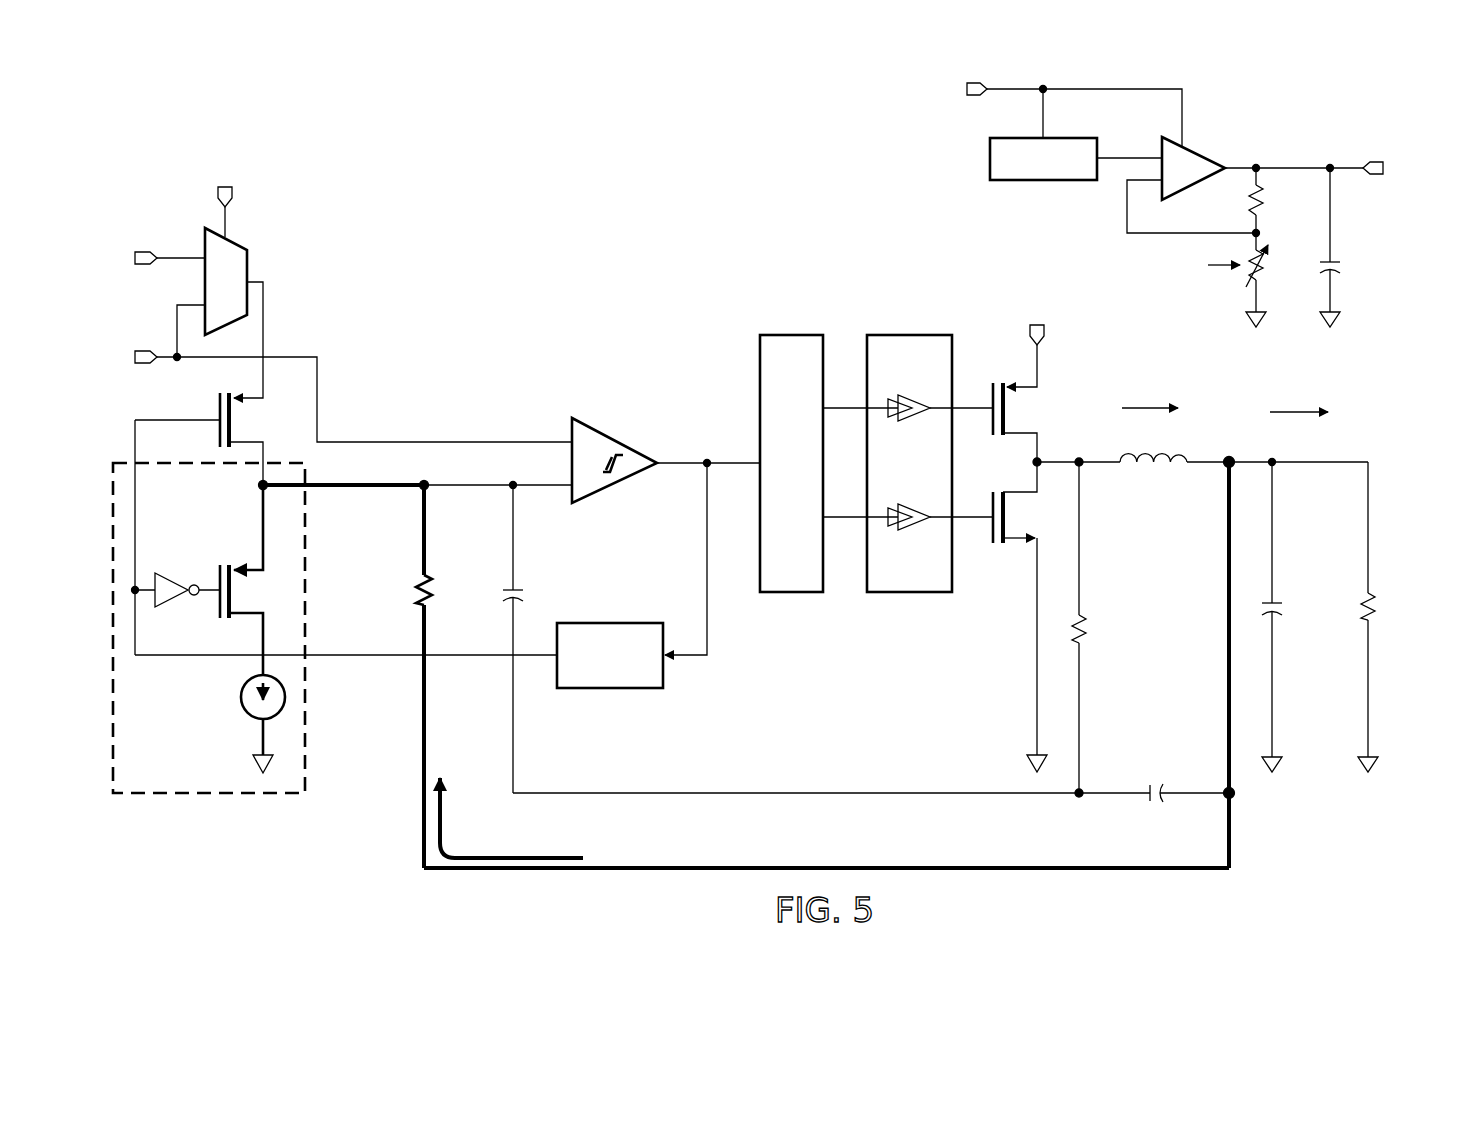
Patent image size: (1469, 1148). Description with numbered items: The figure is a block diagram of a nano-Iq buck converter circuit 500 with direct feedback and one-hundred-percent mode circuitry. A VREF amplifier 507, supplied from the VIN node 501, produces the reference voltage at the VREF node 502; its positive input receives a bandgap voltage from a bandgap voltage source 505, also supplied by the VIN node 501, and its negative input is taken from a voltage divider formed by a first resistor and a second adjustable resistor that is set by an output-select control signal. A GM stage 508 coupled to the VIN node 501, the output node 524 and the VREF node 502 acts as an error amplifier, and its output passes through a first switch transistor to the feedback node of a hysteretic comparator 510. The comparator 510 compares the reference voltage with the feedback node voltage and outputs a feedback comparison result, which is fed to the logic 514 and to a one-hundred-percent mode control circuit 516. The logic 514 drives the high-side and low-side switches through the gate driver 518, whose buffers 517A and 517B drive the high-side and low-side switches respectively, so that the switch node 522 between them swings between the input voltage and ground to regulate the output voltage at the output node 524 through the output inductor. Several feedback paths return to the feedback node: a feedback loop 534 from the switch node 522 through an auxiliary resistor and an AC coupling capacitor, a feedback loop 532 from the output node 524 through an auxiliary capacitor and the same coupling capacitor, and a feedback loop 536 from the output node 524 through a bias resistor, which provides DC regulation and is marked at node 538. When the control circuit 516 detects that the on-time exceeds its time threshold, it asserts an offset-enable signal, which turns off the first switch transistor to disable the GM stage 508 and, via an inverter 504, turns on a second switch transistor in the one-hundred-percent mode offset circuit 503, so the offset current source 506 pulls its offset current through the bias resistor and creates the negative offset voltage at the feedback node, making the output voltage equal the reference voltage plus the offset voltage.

The nano-Iq buck converter circuit 500 is at (455, 140).
The VIN node 501 is at (215, 195).
The VREF node 502 is at (148, 348).
The 100% mode offset circuit 503 is at (197, 797).
The inverter 504 is at (188, 585).
The bandgap voltage source 505 is at (1035, 182).
The offset current source 506 is at (248, 712).
The VREF amplifier 507 is at (1212, 165).
The GM stage 508 is at (238, 250).
The hysteretic comparator 510 is at (605, 430).
The logic 514 is at (790, 333).
The 100% mode control circuit 516 is at (612, 690).
The gate driver buffer 517A is at (908, 398).
The gate driver buffer 517B is at (908, 535).
The gate driver 518 is at (907, 333).
The switch node 522 is at (1085, 467).
The output node 524 is at (1222, 467).
The feedback loop 532 is at (1100, 796).
The feedback loop 534 is at (1082, 592).
The feedback loop 536 is at (1037, 870).
The bias resistor node 538 is at (370, 657).